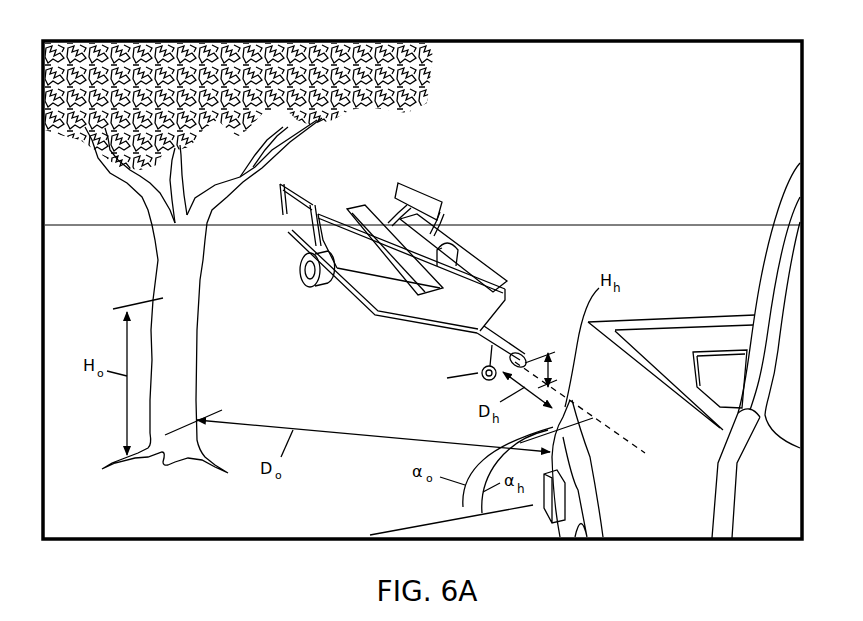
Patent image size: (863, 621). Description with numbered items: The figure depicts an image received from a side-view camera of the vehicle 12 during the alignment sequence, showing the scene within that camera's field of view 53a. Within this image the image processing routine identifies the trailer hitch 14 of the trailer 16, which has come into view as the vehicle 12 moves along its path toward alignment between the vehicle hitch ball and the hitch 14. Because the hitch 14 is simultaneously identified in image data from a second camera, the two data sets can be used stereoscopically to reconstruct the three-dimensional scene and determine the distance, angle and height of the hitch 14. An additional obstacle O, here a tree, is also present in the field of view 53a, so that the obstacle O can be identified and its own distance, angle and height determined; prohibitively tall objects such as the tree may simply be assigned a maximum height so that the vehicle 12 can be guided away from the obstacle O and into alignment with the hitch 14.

The field of view 53a is at (691, 38).
The vehicle 12 is at (748, 281).
The trailer hitch 14 is at (518, 356).
The trailer 16 is at (476, 263).
The obstacle O is at (210, 326).